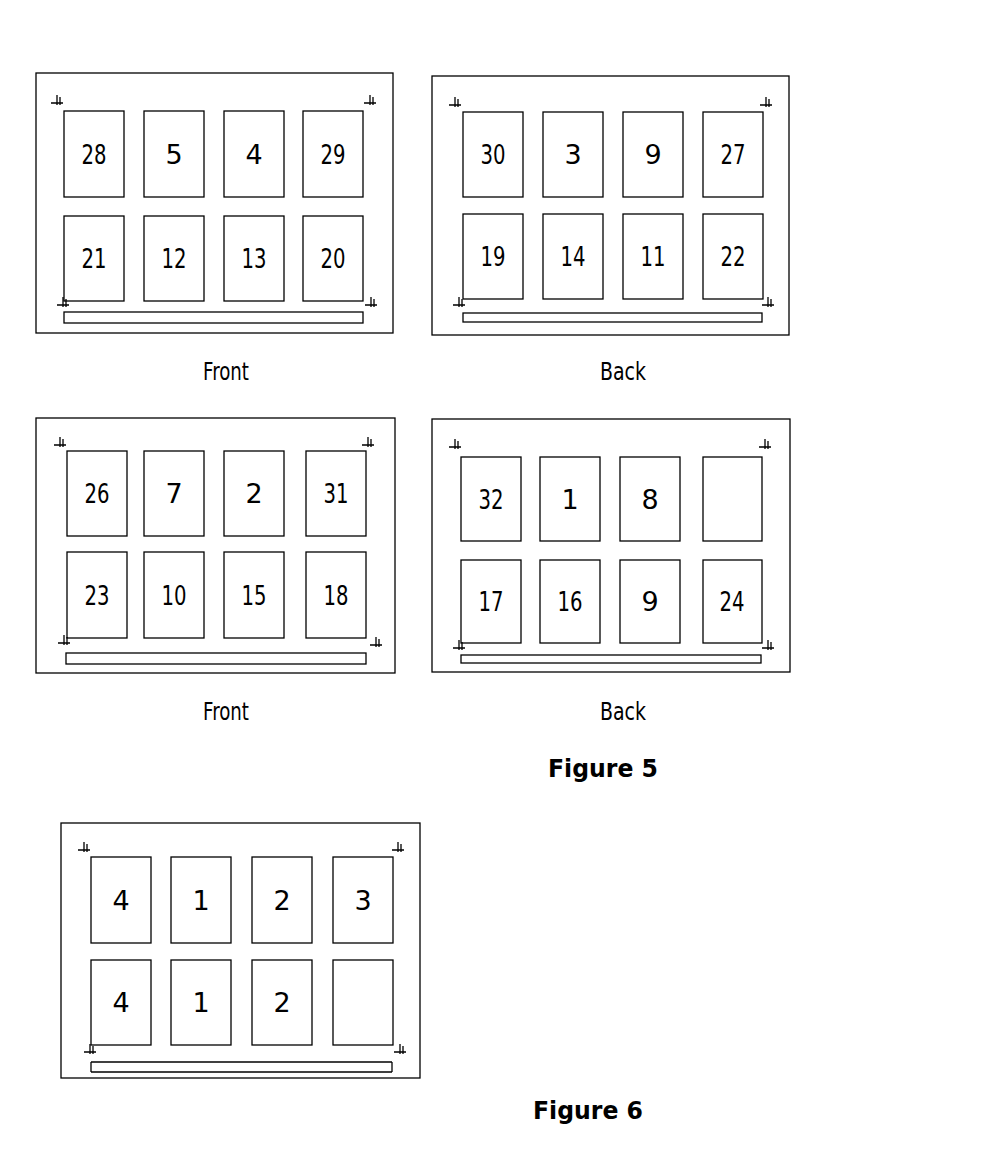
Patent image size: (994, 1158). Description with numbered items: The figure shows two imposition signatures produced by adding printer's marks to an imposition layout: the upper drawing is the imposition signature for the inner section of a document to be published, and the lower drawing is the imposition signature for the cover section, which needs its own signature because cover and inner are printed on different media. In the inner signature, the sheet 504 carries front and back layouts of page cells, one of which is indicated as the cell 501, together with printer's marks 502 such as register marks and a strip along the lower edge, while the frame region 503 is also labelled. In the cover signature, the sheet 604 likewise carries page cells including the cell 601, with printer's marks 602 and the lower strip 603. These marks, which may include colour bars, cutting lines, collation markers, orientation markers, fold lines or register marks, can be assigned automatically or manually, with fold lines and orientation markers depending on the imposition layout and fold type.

In FIG. 5, the card cell / page position 501 is at (745, 506).
In FIG. 5, the printer's marks 502 is at (377, 656).
In FIG. 5, the sheet frame 503 is at (70, 670).
In FIG. 5, the printed sheet 504 is at (416, 59).
In FIG. 6, the card cell 601 is at (370, 1000).
In FIG. 6, the printer's marks 602 is at (400, 850).
In FIG. 6, the binding strip edge 603 is at (347, 1075).
In FIG. 6, the printed sheet 604 is at (438, 951).